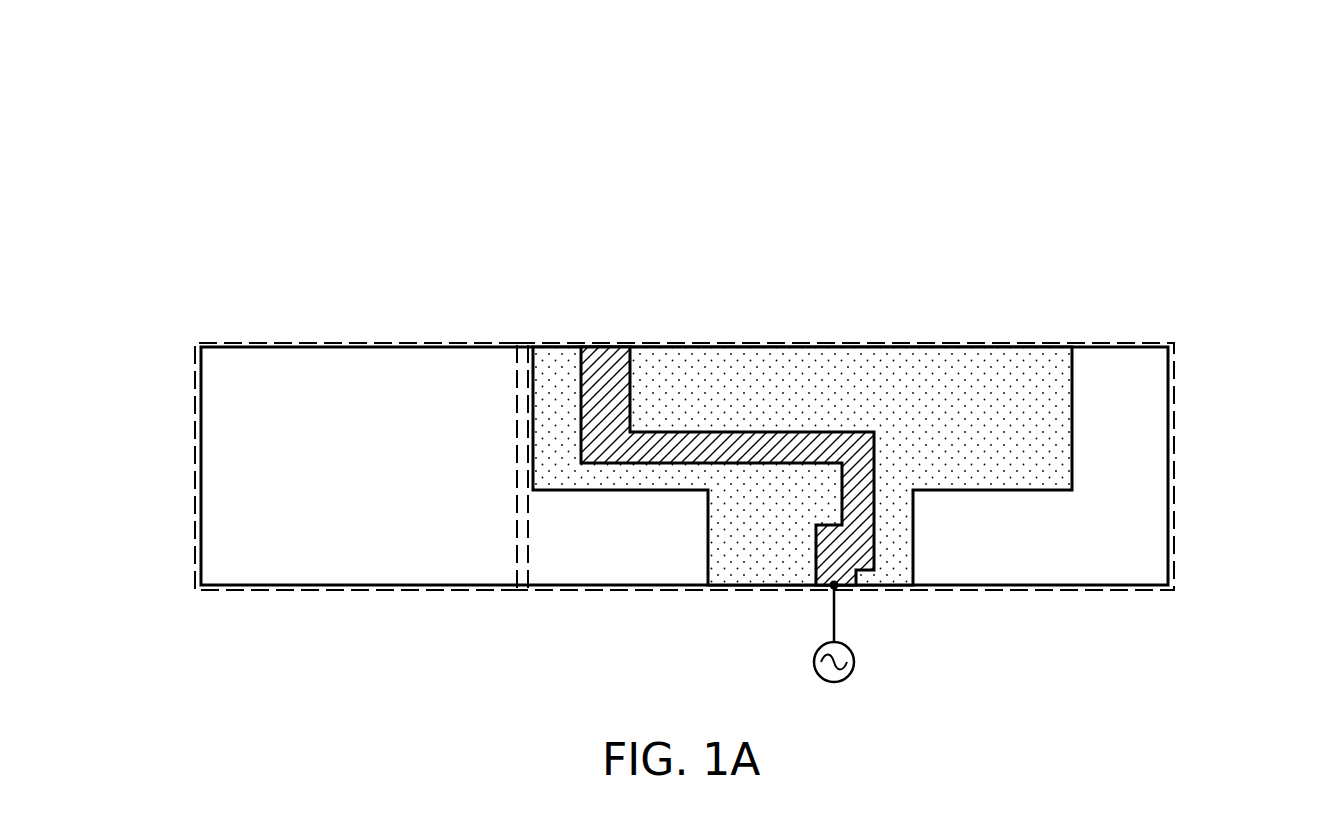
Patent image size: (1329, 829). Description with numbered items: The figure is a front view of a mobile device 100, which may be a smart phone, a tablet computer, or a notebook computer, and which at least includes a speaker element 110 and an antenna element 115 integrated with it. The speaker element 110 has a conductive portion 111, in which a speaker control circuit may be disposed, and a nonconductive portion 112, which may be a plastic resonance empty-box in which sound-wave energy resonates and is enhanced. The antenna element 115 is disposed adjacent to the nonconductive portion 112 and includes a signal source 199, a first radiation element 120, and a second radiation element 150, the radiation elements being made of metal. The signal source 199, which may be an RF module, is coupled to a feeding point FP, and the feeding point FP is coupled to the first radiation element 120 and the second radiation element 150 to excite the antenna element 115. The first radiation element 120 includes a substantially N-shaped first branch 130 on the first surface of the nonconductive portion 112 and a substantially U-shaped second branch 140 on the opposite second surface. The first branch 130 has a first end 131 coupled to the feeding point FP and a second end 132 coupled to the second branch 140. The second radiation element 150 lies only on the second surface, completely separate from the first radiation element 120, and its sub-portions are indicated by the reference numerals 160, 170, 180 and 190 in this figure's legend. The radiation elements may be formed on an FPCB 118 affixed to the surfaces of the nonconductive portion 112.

The mobile device 100 is at (140, 92).
The speaker element 110 is at (522, 345).
The conductive portion 111 is at (283, 343).
The nonconductive portion 112 is at (850, 343).
The antenna element 115 is at (945, 60).
The FPCB 118 is at (568, 490).
The first radiation element 120 is at (1094, 140).
The first branch 130 is at (738, 447).
The first end 131 is at (843, 588).
The second end 132 is at (605, 347).
The second branch 140 is at (837, 347).
The second radiation element 150 is at (1242, 230).
The first layer 160 is at (743, 325).
The second layer 170 is at (743, 347).
The third layer 180 is at (743, 370).
The fourth layer 190 is at (743, 392).
The signal source 199 is at (814, 662).
The feeding point FP is at (830, 593).